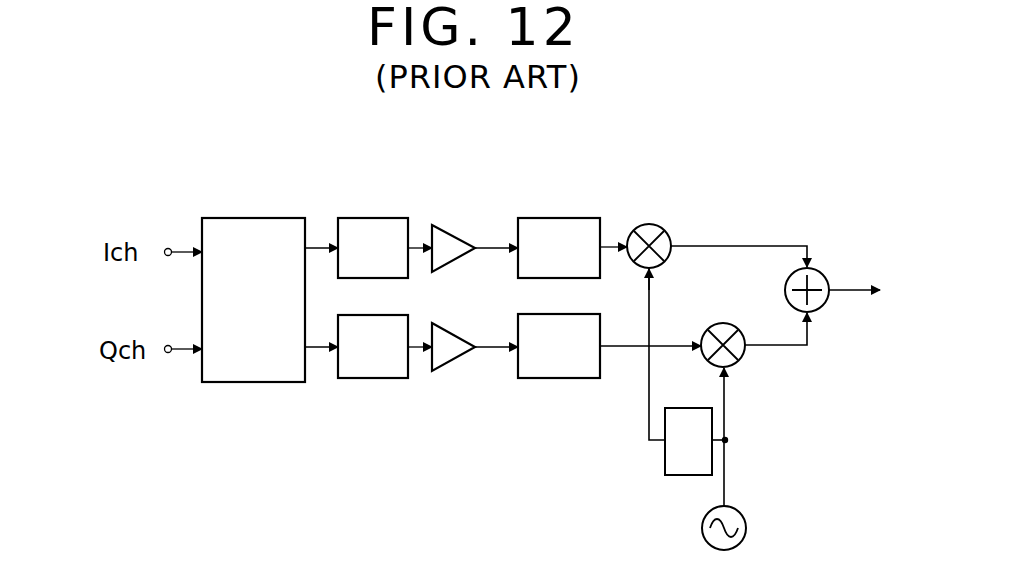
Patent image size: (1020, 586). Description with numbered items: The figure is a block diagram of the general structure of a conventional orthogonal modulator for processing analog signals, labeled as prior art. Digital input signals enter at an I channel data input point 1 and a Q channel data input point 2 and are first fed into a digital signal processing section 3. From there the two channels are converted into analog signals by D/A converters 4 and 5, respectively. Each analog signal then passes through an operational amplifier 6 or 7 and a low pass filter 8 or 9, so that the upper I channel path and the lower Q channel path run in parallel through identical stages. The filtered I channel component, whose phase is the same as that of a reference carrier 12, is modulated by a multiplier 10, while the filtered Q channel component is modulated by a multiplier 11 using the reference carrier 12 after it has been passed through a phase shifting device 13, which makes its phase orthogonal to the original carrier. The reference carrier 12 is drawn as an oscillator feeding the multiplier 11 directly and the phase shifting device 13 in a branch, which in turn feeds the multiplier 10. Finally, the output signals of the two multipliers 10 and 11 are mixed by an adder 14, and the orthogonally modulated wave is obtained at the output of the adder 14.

The I channel data input point 1 is at (167, 247).
The Q channel data input point 2 is at (167, 344).
The digital signal processing section 3 is at (253, 218).
The D/A converter 4 is at (364, 218).
The D/A converter 5 is at (369, 378).
The amplifier 6 is at (440, 228).
The amplifier 7 is at (446, 362).
The low pass filter 8 is at (545, 218).
The low pass filter 9 is at (540, 378).
The multiplier 10 is at (651, 224).
The multiplier 11 is at (726, 323).
The reference carrier 12 is at (746, 514).
The phase shifting device 13 is at (682, 475).
The adder 14 is at (821, 272).